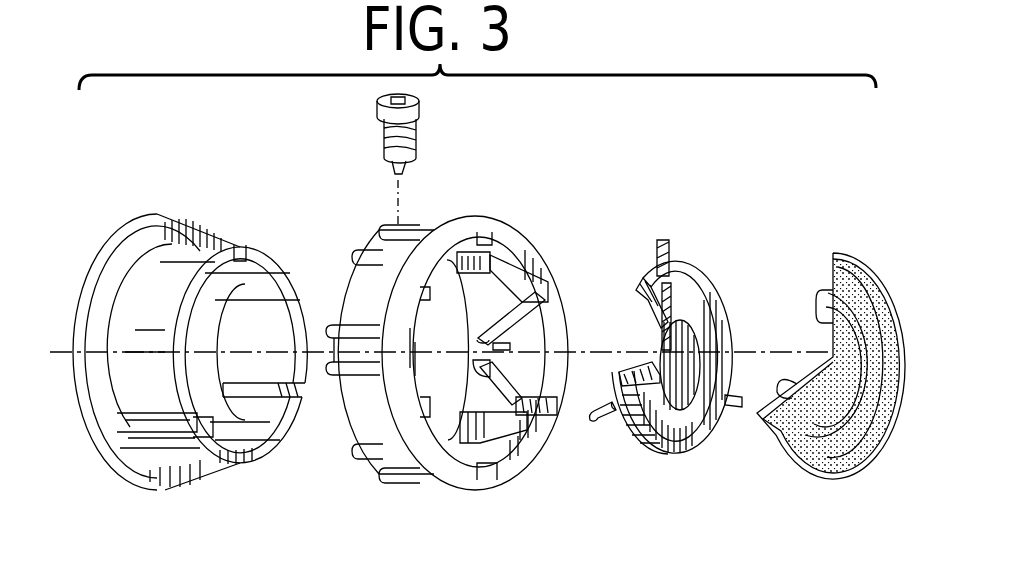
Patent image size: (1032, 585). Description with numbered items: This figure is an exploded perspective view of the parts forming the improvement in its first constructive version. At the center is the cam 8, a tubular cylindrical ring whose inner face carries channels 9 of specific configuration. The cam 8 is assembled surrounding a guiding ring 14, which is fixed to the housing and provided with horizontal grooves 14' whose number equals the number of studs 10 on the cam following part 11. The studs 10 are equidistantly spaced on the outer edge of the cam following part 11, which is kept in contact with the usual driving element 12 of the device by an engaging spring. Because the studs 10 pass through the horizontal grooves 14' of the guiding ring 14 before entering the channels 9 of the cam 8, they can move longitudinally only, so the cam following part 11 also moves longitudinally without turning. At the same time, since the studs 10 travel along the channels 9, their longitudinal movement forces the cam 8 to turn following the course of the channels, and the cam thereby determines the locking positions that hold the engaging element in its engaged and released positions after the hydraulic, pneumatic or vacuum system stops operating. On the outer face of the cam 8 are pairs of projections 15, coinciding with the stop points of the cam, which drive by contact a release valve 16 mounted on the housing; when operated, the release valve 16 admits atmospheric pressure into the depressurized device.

The cam 8 is at (538, 240).
The channels 9 is at (538, 393).
The studs 10 is at (663, 238).
The cam following part 11 is at (706, 290).
The driving element 12 is at (850, 470).
The guiding ring 14 is at (176, 341).
The horizontal grooves 14' is at (252, 341).
The pairs of projections 15 is at (387, 233).
The release valve 16 is at (421, 137).